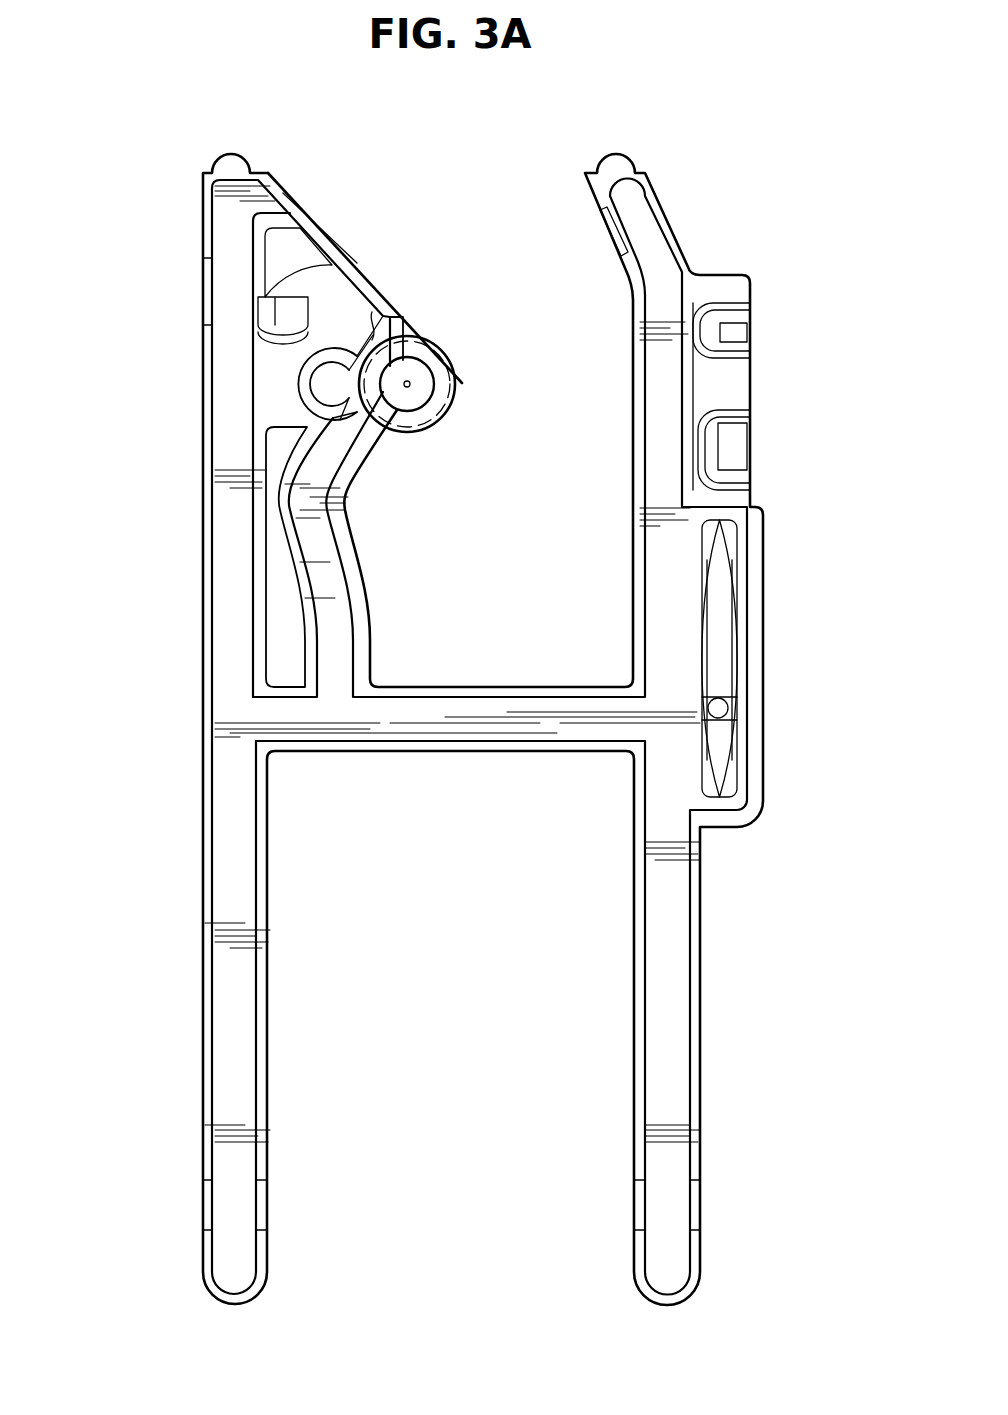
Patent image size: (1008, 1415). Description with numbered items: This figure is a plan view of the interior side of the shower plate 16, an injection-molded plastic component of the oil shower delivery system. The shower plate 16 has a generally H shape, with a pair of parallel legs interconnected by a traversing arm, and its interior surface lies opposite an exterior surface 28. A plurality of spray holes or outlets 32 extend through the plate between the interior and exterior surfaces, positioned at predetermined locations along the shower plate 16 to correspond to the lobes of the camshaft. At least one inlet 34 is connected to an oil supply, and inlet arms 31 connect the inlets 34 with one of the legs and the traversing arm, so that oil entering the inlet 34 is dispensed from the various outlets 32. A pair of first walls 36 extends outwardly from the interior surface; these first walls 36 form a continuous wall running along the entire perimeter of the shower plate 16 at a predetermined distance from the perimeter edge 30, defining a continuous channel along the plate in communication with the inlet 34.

The shower plate 16 is at (90, 178).
The exterior surface 28 is at (348, 724).
The perimeter edge 30 is at (330, 225).
The inlet arms 31 is at (390, 300).
The outlets 32 is at (228, 221).
The inlet 34 is at (410, 383).
The first walls 36 is at (358, 261).